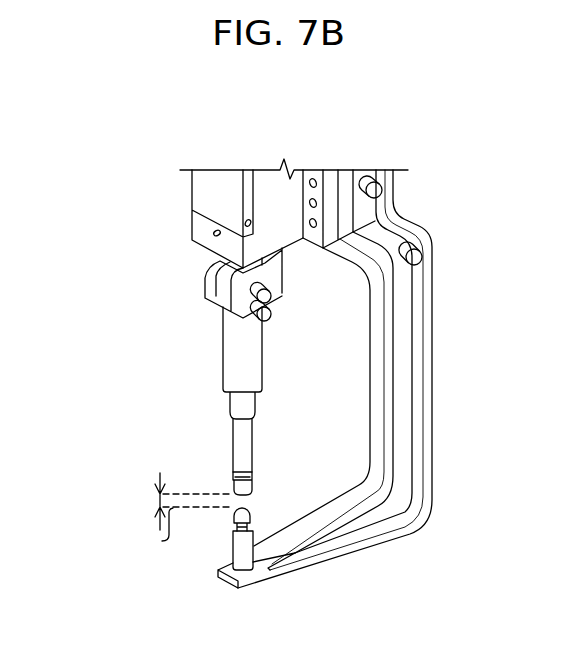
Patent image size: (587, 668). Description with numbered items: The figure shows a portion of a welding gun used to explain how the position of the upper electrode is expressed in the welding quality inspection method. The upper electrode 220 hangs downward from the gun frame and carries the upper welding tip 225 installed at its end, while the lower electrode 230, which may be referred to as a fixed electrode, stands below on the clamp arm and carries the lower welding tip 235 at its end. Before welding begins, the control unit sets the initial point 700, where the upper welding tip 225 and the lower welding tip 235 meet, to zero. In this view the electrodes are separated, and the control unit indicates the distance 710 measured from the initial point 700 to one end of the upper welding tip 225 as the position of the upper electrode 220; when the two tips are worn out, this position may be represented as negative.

The upper electrode 220 is at (245, 445).
The upper welding tip 225 is at (250, 487).
The lower electrode 230 is at (234, 547).
The lower welding tip 235 is at (235, 517).
The initial point 700 is at (162, 541).
The distance 710 is at (157, 494).